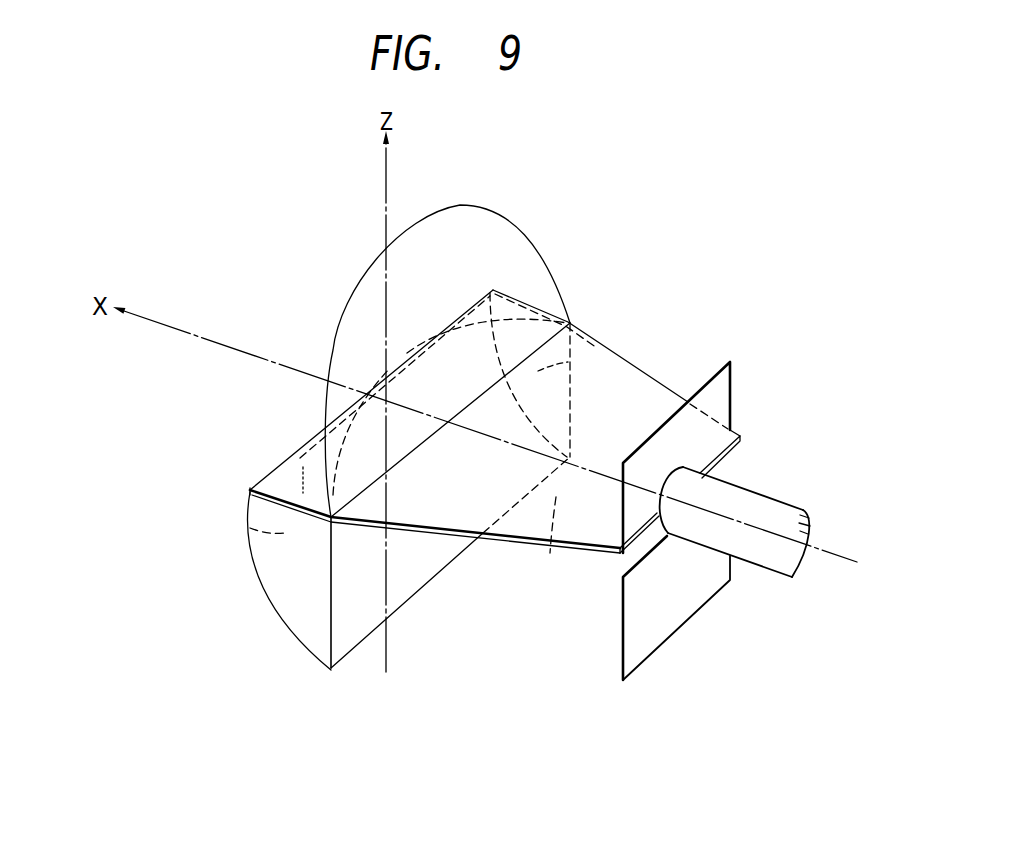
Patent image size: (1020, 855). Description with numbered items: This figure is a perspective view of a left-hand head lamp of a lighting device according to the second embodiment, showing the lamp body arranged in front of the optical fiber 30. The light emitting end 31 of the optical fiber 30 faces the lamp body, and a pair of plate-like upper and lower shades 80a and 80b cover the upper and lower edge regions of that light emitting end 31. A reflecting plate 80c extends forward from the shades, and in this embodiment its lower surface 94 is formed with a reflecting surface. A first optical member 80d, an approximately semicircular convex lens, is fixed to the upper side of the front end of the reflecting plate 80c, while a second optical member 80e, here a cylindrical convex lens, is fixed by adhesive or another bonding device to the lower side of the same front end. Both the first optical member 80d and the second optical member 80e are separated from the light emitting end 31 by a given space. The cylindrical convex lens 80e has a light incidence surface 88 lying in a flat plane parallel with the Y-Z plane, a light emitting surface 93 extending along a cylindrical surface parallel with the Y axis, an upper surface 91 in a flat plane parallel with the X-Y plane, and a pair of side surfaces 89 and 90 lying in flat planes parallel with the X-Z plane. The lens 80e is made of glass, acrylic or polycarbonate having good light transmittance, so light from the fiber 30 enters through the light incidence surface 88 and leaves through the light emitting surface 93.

The optical fiber 30 is at (812, 518).
The light emitting end 31 is at (653, 500).
The upper shade 80a is at (718, 397).
The lower shade 80b is at (700, 578).
The reflecting plate 80c is at (613, 367).
The first optical member 80d is at (486, 222).
The second optical member 80e is at (295, 618).
The light incidence surface 88 is at (412, 572).
The side surface 89 is at (283, 577).
The side surface 90 is at (592, 338).
The upper surface 91 is at (300, 462).
The light emitting surface 93 is at (243, 531).
The lower surface 94 is at (548, 553).